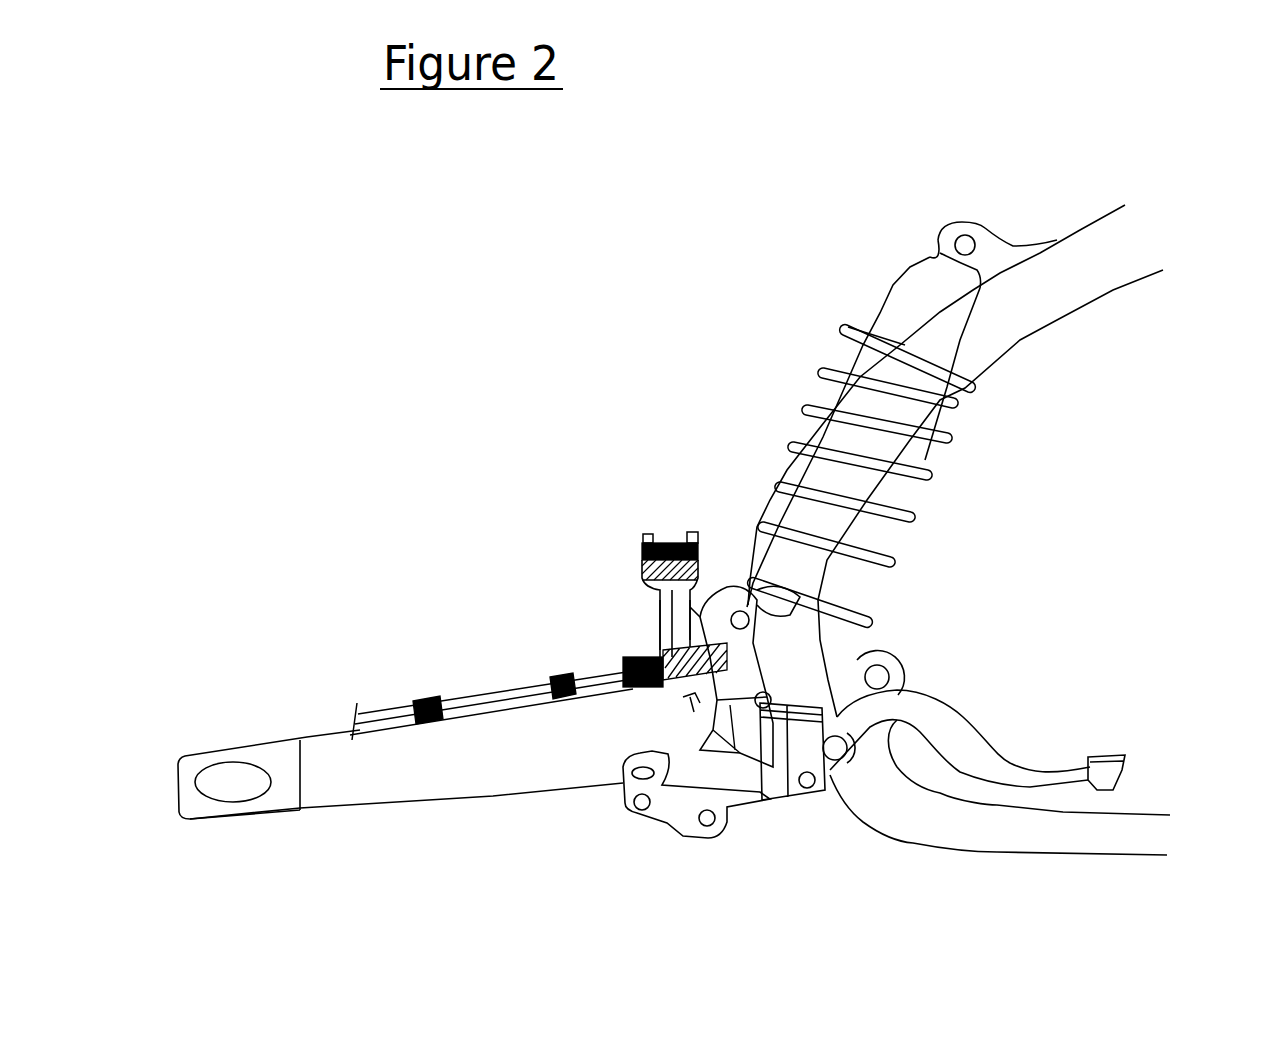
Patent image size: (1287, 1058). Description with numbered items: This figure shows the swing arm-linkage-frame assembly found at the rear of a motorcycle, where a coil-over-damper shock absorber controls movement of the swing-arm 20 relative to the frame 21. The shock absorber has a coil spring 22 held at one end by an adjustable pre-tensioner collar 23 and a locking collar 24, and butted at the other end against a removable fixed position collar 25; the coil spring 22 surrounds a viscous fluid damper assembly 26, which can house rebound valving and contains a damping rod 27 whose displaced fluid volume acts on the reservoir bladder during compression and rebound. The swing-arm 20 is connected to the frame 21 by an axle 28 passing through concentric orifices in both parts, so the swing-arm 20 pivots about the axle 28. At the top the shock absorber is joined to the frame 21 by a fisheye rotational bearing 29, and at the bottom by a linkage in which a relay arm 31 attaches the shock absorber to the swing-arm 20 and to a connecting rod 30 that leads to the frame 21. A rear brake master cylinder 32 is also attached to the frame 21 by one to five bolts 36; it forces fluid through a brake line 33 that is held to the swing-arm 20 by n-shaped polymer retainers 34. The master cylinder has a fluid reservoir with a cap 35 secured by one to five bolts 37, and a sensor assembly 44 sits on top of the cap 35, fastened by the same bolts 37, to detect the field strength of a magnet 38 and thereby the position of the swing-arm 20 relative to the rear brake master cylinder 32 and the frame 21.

The swing-arm 20 is at (308, 737).
The frame 21 is at (1083, 268).
The coil spring 22 is at (888, 393).
The adjustable pre-tensioner collar 23 is at (853, 327).
The locking collar 24 is at (867, 323).
The removable fixed position collar 25 is at (688, 697).
The viscous fluid damper assembly 26 is at (890, 492).
The damping rod 27 is at (847, 535).
The axle 28 is at (880, 677).
The fisheye rotational bearing 29 is at (967, 243).
The connecting rod 30 is at (765, 800).
The relay arm 31 is at (673, 838).
The rear brake master cylinder 32 is at (663, 607).
The brake line 33 is at (497, 689).
The polymer retainers 34 is at (553, 697).
The cap 35 is at (642, 555).
The bolts 36 is at (757, 697).
The bolts 37 is at (690, 535).
The magnet 38 is at (627, 657).
The sensor assembly 44 is at (663, 543).